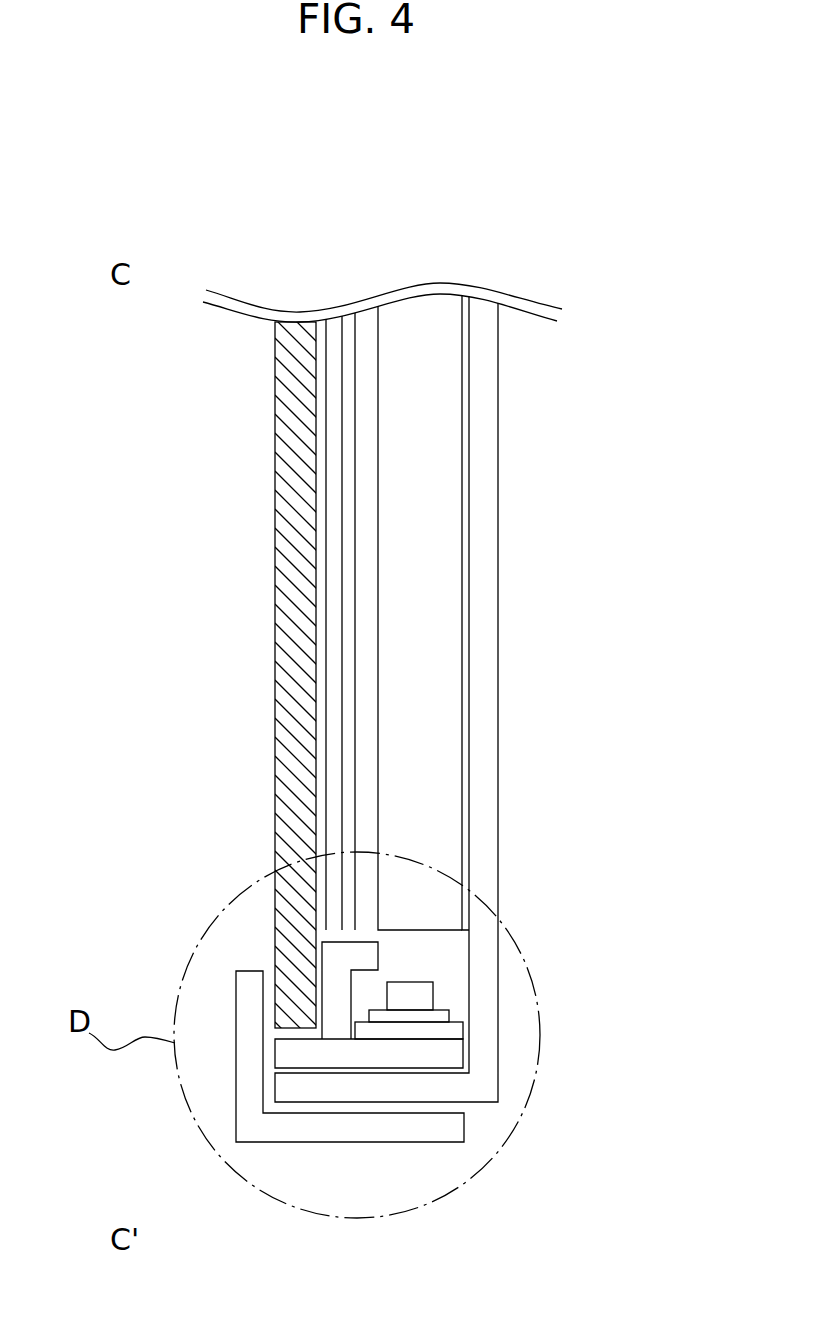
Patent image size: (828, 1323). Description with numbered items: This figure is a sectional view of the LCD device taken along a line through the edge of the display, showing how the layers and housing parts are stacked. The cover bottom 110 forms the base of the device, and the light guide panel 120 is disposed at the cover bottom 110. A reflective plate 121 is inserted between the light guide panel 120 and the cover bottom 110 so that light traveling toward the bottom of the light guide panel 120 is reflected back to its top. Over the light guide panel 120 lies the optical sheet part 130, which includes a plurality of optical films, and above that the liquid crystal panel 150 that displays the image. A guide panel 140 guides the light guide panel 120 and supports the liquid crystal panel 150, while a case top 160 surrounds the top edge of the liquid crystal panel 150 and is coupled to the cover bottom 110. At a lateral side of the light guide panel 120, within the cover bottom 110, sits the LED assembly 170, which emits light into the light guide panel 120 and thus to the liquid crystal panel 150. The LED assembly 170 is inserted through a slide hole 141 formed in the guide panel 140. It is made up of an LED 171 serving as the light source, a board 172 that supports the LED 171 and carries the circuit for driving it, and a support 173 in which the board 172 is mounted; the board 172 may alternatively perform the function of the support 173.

The cover bottom 110 is at (479, 619).
The light guide panel 120 is at (392, 507).
The reflective plate 121 is at (465, 500).
The optical sheet part 130 is at (333, 568).
The guide panel 140 is at (434, 1052).
The slide hole 141 is at (367, 993).
The liquid crystal panel 150 is at (297, 667).
The case top 160 is at (378, 1128).
The LED assembly 170 is at (531, 997).
The LED 171 is at (412, 994).
The board 172 is at (430, 1016).
The support 173 is at (438, 1031).